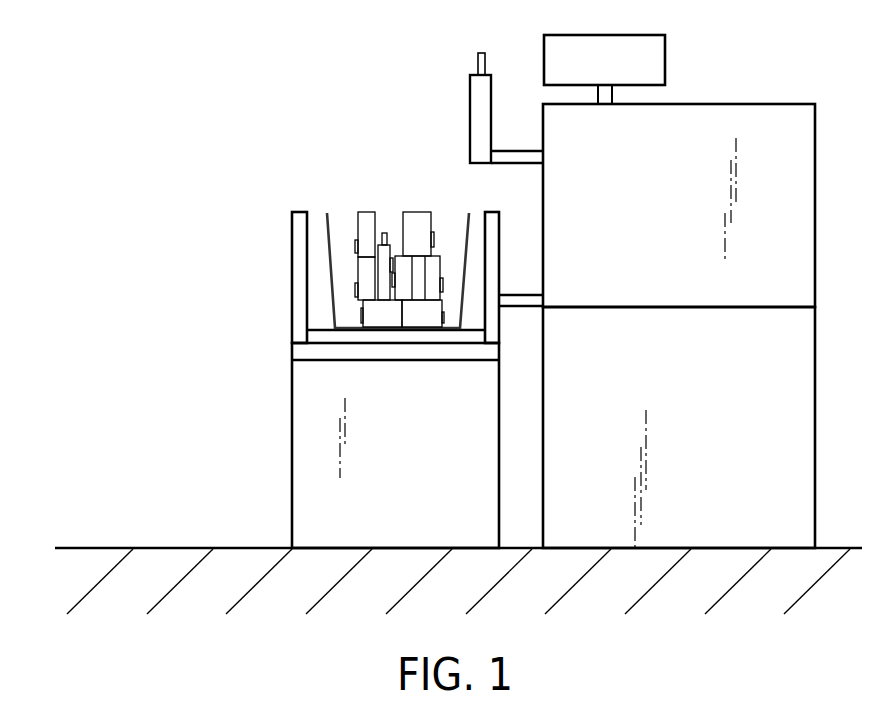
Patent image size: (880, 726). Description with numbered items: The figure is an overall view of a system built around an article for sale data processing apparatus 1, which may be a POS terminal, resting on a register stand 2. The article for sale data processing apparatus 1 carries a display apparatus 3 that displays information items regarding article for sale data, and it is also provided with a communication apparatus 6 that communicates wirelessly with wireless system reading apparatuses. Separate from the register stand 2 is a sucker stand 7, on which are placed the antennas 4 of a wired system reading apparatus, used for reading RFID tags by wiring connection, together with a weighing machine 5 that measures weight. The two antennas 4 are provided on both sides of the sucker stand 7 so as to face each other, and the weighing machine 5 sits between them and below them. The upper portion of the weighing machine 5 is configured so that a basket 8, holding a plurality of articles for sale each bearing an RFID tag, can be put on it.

The article for sale data processing apparatus 1 is at (817, 273).
The register stand 2 is at (817, 340).
The display apparatus 3 is at (666, 60).
The antennas of wired system reading apparatus 4 is at (292, 248).
The weighing machine 5 is at (396, 340).
The communication apparatus 6 is at (492, 89).
The sucker stand 7 is at (291, 423).
The basket 8 is at (467, 225).